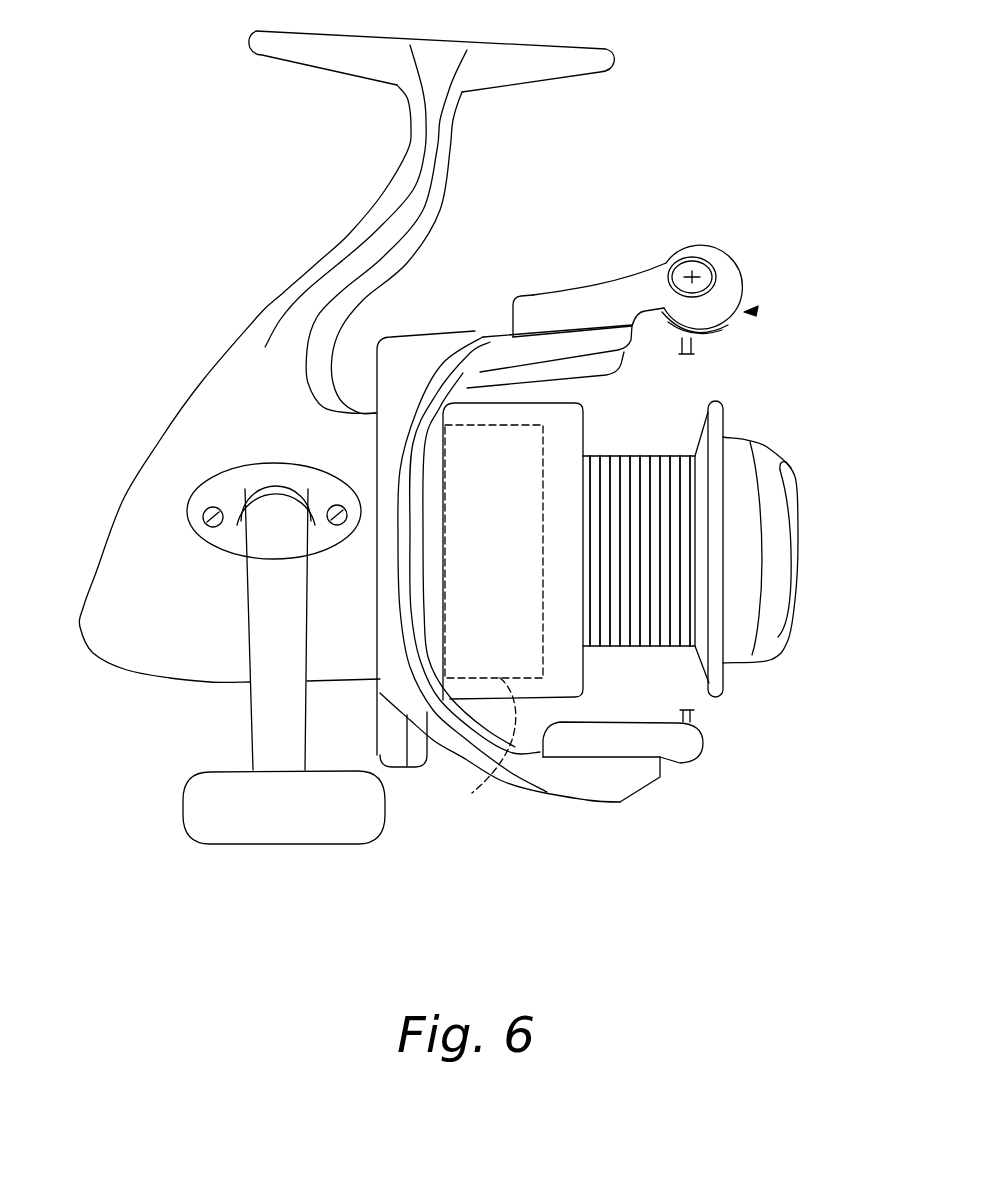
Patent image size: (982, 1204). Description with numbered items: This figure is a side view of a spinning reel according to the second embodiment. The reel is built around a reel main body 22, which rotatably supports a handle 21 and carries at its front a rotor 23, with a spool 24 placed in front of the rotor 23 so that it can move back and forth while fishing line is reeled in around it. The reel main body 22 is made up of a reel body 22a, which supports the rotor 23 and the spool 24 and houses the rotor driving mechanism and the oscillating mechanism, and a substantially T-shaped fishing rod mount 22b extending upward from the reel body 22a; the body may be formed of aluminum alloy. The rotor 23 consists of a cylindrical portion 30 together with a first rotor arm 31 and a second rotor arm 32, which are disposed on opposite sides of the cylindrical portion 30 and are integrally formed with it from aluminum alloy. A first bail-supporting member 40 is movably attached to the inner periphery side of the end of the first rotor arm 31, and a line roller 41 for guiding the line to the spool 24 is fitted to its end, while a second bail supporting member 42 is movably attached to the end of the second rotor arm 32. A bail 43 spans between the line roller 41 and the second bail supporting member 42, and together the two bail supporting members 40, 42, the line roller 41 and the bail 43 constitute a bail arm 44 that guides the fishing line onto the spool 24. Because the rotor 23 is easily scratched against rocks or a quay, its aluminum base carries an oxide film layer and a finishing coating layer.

The handle 21 is at (270, 717).
The reel main body 22 is at (178, 392).
The reel body 22a is at (165, 470).
The fishing rod mount 22b is at (259, 312).
The rotor 23 is at (428, 320).
The spool 24 is at (621, 447).
The cylindrical portion 30 is at (515, 578).
The first rotor arm 31 is at (546, 343).
The second rotor arm 32 is at (570, 777).
The first bail-supporting member 40 is at (658, 265).
The line roller 41 is at (624, 340).
The second bail supporting member 42 is at (687, 750).
The bail 43 is at (693, 714).
The bail arm 44 is at (746, 312).